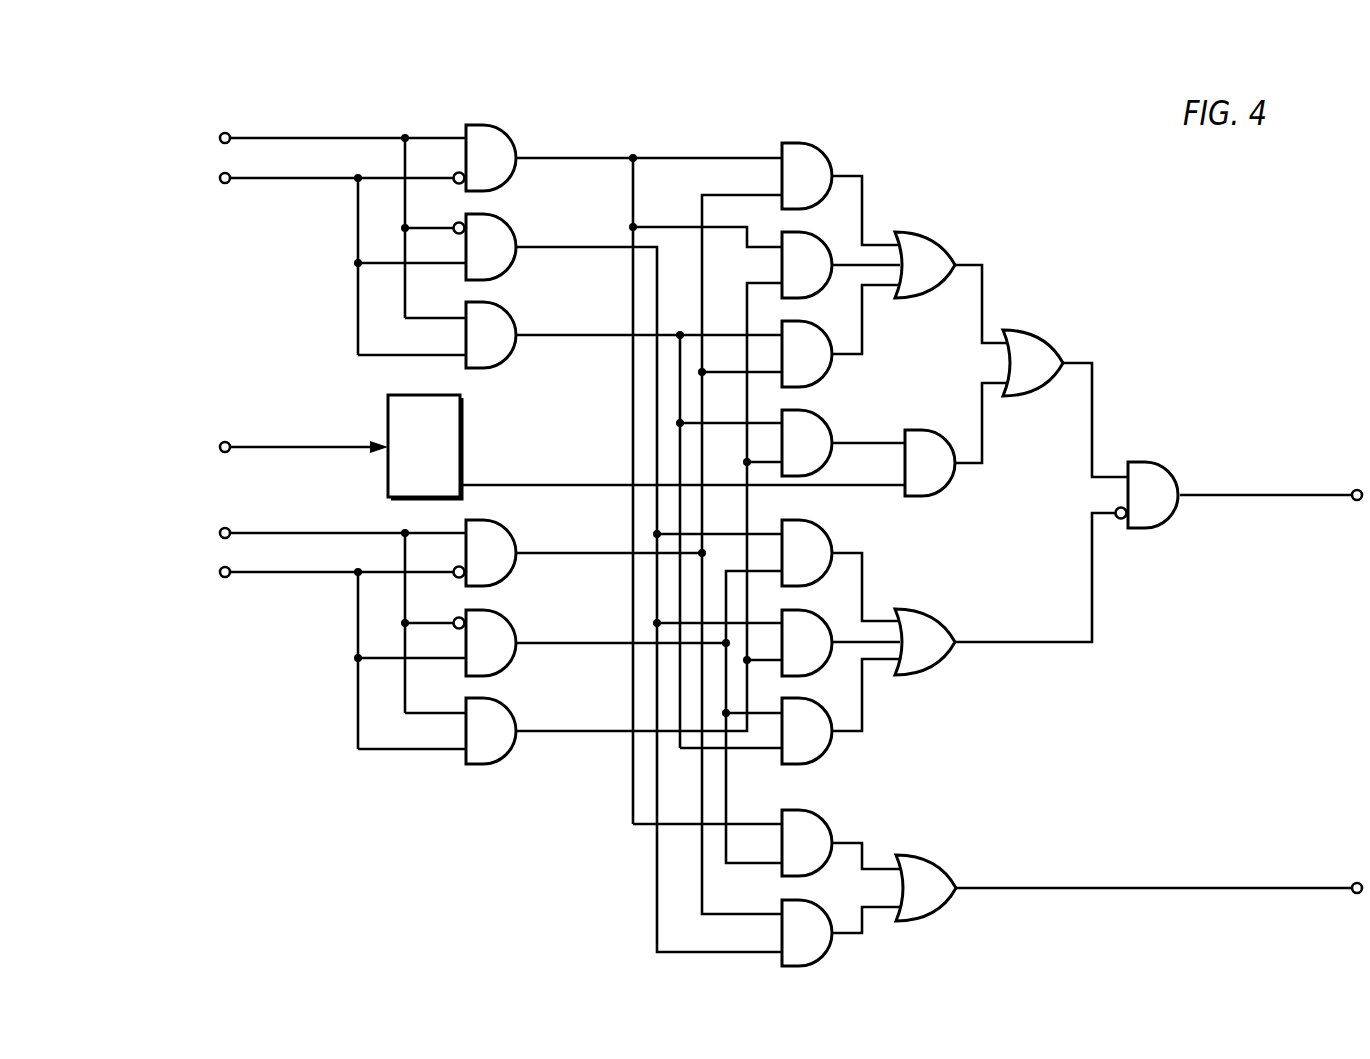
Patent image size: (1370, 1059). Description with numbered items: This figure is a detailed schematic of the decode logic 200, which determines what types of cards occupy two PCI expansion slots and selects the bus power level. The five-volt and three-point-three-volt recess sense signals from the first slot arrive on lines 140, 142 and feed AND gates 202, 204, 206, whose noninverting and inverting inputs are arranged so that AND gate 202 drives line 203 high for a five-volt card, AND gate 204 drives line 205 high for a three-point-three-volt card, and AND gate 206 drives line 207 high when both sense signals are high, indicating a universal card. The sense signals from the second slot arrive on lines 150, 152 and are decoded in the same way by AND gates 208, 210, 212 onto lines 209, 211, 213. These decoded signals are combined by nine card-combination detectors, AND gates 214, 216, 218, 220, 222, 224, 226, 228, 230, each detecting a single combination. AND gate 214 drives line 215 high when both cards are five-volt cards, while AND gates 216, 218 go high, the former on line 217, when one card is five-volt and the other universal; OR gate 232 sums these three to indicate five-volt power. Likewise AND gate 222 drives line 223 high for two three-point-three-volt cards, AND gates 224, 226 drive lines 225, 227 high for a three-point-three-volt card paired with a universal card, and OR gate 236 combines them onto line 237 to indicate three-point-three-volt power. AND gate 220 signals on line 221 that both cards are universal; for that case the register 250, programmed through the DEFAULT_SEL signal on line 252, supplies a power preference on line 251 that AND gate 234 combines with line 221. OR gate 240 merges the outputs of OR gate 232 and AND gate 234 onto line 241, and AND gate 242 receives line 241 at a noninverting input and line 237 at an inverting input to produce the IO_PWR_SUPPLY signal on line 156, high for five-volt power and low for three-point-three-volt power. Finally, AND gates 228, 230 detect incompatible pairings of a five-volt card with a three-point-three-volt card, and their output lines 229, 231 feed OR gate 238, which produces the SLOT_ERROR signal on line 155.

The line 140 is at (343, 211).
The line 142 is at (289, 181).
The line 150 is at (255, 528).
The line 152 is at (257, 576).
The line 155 is at (1040, 886).
The line 156 is at (1252, 498).
The decode logic 200 is at (1086, 270).
The AND gate 202 is at (471, 170).
The line 203 is at (684, 155).
The AND gate 204 is at (471, 259).
The line 205 is at (589, 251).
The AND gate 206 is at (471, 347).
The line 207 is at (589, 340).
The AND gate 208 is at (471, 565).
The line 209 is at (581, 557).
The AND gate 210 is at (471, 655).
The line 211 is at (580, 649).
The AND gate 212 is at (471, 743).
The line 213 is at (580, 739).
The AND gate 214 is at (787, 188).
The line 215 is at (850, 173).
The AND gate 216 is at (787, 277).
The output line of AND gate 216 217 is at (876, 229).
The AND gate 218 is at (787, 366).
The AND gate 220 is at (787, 455).
The line 221 is at (849, 441).
The AND gate 222 is at (787, 565).
The line 223 is at (863, 567).
The AND gate 224 is at (787, 655).
The output line of AND gate 224 225 is at (881, 610).
The AND gate 226 is at (787, 743).
The output line of AND gate 226 227 is at (863, 706).
The AND gate 228 is at (787, 855).
The output line of AND gate 228 229 is at (852, 842).
The AND gate 230 is at (787, 945).
The output line of AND gate 230 231 is at (877, 937).
The OR gate 232 is at (910, 277).
The AND gate 234 is at (910, 475).
The OR gate 236 is at (910, 654).
The line 237 is at (1093, 588).
The OR gate 238 is at (911, 900).
The OR gate 240 is at (1018, 375).
The line 241 is at (1093, 402).
The AND gate 242 is at (1133, 507).
The register 250 is at (407, 427).
The line 251 is at (513, 482).
The line 252 is at (347, 451).